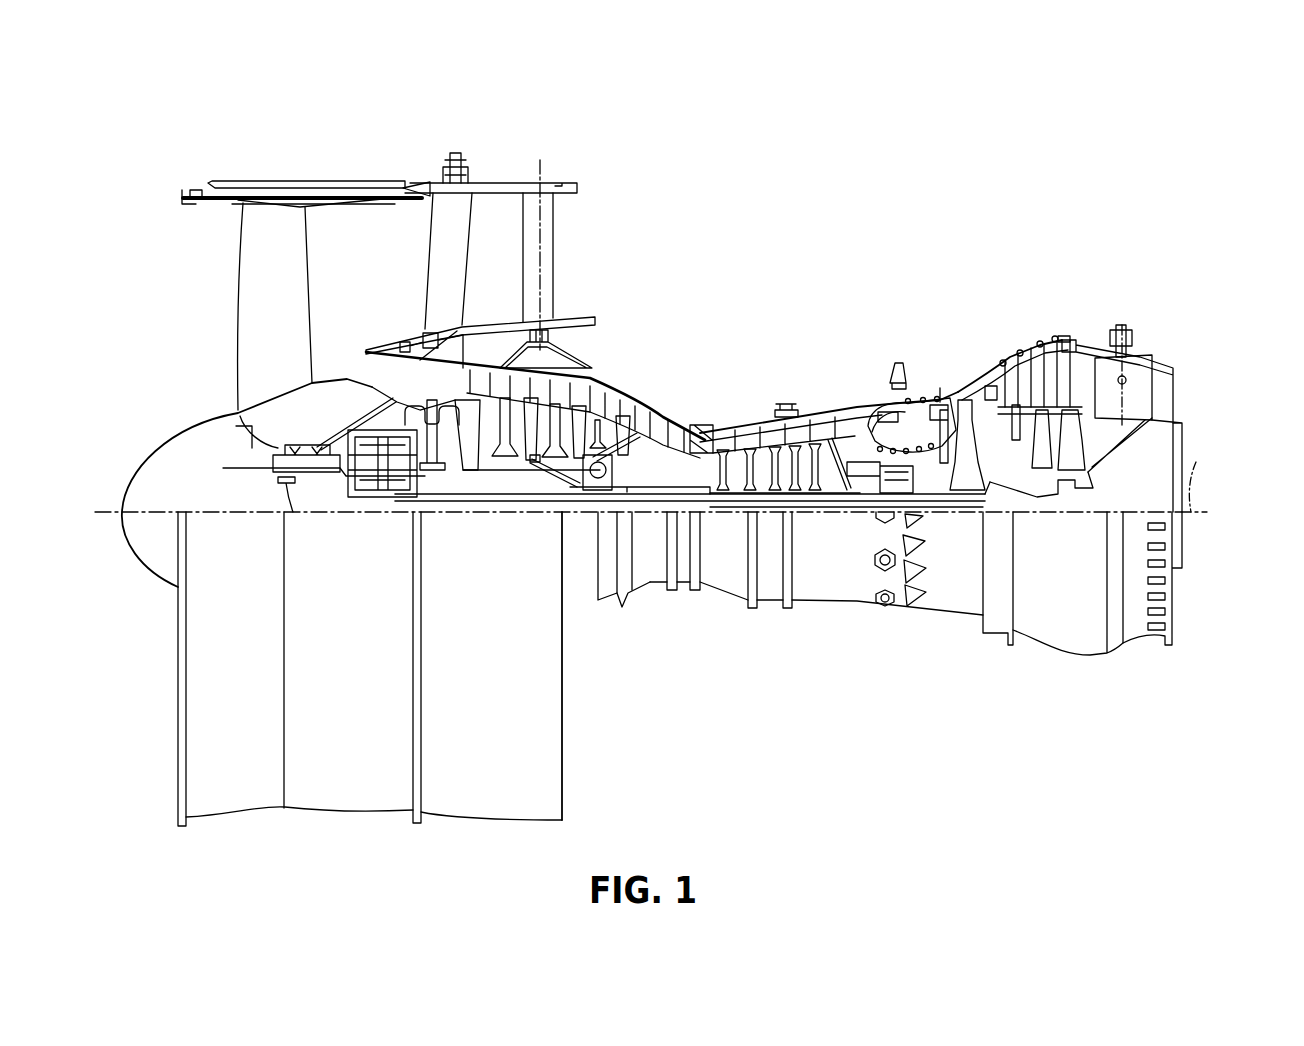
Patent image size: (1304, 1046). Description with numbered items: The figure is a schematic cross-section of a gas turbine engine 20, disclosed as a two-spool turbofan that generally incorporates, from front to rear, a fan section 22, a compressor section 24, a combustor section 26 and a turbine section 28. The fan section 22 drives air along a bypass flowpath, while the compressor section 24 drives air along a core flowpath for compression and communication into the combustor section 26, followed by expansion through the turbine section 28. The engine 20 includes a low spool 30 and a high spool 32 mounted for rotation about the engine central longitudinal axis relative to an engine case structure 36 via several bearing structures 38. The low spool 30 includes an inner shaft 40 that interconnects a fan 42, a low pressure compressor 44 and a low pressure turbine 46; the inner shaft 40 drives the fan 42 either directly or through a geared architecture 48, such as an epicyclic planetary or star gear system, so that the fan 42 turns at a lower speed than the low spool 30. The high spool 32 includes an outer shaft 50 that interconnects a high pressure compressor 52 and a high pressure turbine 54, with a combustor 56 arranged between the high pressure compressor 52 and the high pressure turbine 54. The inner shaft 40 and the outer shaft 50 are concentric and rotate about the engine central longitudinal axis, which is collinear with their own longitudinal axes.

The gas turbine engine 20 is at (952, 241).
The fan section 22 is at (180, 166).
The compressor section 24 is at (805, 292).
The combustor section 26 is at (905, 292).
The turbine section 28 is at (1122, 292).
The low spool 30 is at (640, 472).
The high spool 32 is at (823, 467).
The engine case structure 36 is at (772, 605).
The bearing structures 38 is at (212, 573).
The inner shaft 40 is at (936, 496).
The fan 42 is at (284, 334).
The low pressure compressor 44 is at (588, 380).
The low pressure turbine 46 is at (1050, 373).
The geared architecture 48 is at (383, 472).
The outer shaft 50 is at (942, 500).
The high pressure compressor 52 is at (708, 443).
The high pressure turbine 54 is at (965, 418).
The combustor 56 is at (901, 441).